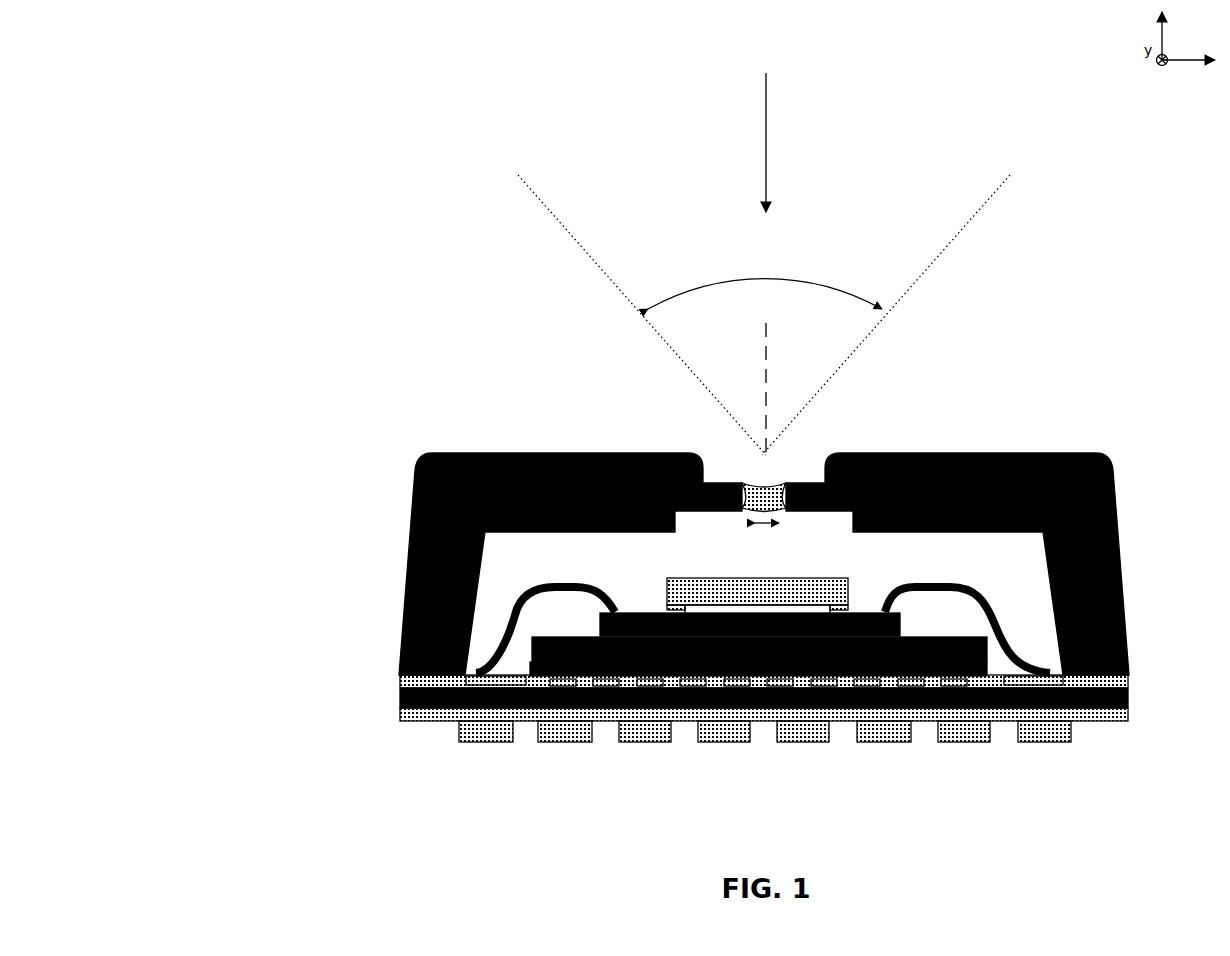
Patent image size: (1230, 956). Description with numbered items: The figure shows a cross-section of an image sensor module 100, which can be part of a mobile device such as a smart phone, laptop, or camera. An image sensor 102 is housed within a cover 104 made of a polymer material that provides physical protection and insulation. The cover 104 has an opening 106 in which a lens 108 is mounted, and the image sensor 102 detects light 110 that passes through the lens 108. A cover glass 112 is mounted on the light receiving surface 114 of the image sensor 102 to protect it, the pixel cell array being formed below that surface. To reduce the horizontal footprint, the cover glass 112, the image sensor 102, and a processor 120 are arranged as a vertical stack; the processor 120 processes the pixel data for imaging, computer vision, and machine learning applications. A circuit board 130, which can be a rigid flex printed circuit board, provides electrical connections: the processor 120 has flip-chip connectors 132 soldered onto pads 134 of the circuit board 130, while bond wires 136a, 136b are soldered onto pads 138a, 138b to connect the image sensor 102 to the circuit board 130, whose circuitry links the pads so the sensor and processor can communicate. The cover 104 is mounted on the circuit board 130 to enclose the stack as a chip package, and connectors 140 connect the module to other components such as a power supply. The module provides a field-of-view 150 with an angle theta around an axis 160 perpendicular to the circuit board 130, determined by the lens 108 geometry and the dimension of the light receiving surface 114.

The image sensor module 100 is at (315, 171).
The image sensor 102 is at (640, 622).
The cover 104 is at (1028, 453).
The opening 106 is at (770, 528).
The lens 108 is at (776, 484).
The light 110 is at (768, 138).
The cover glass 112 is at (848, 580).
The light receiving surface 114 is at (703, 613).
The processor 120 is at (582, 640).
The circuit board 130 is at (445, 705).
The flip-chip connectors 132 is at (958, 665).
The pads 134 is at (565, 684).
The bond wire 136a is at (555, 590).
The bond wire 136b is at (955, 590).
The pad 138a is at (505, 680).
The pad 138b is at (1022, 680).
The connectors 140 is at (725, 742).
The field-of-view 150 is at (565, 230).
The axis 160 is at (769, 377).